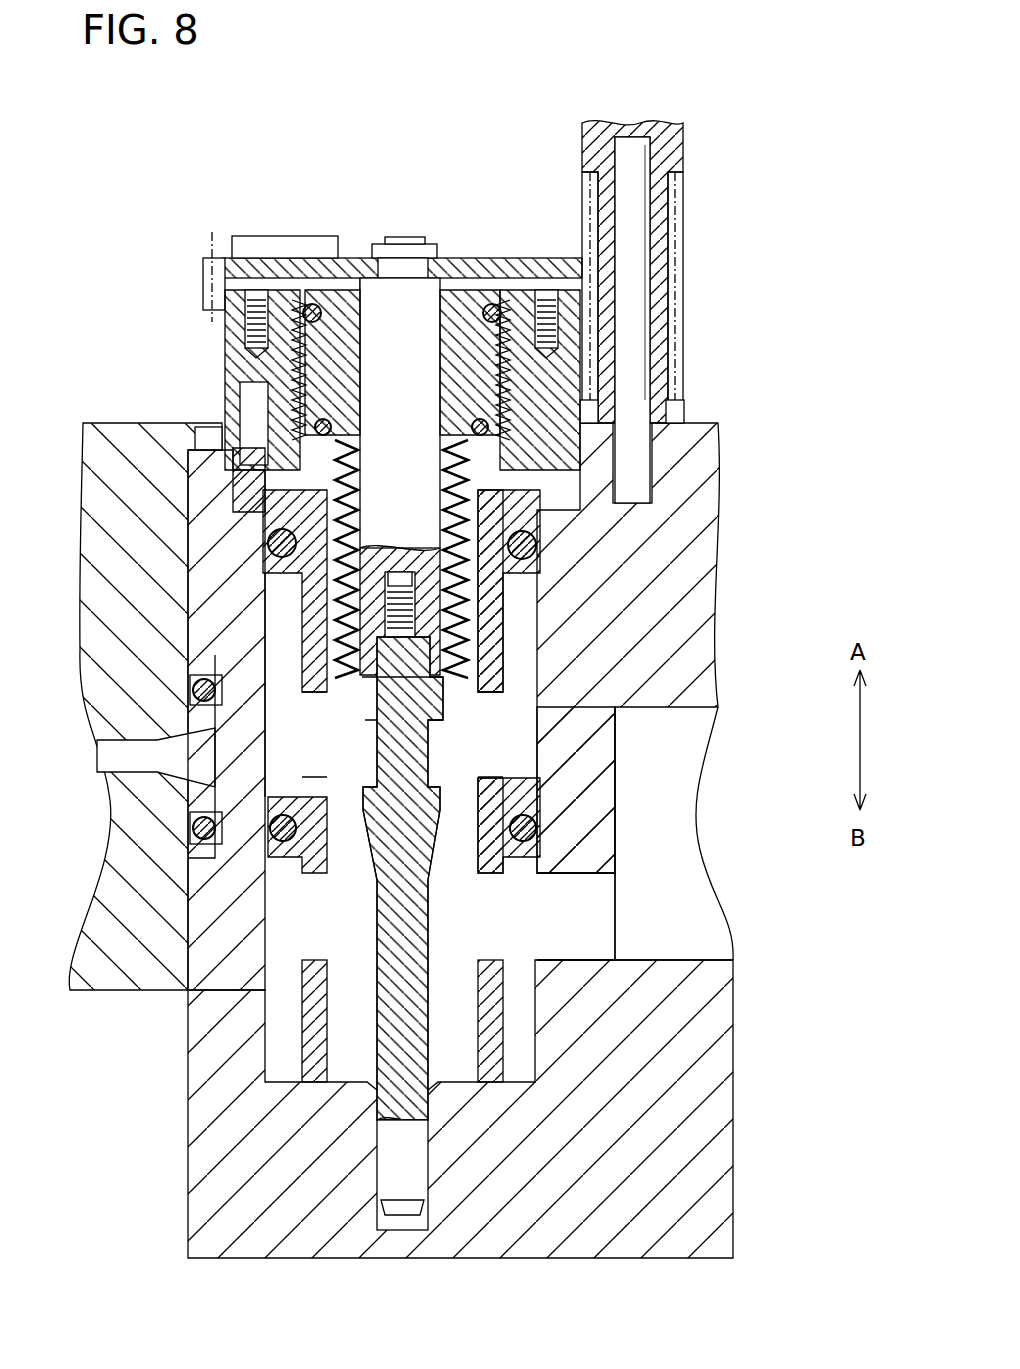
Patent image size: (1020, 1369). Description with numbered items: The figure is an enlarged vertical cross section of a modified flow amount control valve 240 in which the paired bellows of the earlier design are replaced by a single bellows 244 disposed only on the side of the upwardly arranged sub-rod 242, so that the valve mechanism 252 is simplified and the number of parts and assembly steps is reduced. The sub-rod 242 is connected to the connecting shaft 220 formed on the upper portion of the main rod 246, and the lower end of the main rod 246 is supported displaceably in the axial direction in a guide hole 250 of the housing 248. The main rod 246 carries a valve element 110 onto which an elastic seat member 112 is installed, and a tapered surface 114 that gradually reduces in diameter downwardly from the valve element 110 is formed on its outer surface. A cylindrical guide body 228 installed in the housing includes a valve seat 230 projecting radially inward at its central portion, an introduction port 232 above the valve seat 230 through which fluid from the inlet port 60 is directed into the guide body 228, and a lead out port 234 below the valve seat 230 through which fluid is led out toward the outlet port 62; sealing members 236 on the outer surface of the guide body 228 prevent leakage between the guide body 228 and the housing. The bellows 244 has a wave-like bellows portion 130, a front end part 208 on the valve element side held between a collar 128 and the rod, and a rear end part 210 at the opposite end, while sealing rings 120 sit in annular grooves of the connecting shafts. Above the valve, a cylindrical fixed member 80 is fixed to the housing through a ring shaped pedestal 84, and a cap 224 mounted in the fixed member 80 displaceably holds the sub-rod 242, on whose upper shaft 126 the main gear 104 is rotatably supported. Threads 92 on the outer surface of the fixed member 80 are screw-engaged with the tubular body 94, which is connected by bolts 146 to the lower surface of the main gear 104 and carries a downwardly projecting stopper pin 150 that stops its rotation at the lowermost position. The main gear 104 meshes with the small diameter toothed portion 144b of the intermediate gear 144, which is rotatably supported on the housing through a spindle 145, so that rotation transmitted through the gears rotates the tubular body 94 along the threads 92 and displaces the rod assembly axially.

The flow amount control valve 240 is at (183, 145).
The main gear 104 is at (258, 272).
The cap 224 is at (340, 330).
The shaft 126 is at (400, 266).
The sub-rod 242 is at (415, 300).
The bolts 146 is at (542, 300).
The intermediate gear 144 is at (672, 155).
The spindle 145 is at (633, 243).
The small diameter toothed portion 144b is at (676, 292).
The tubular body 94 is at (236, 350).
The threads 92 is at (592, 372).
The sealing rings 120 is at (598, 406).
The rear end part 210 is at (252, 437).
The stopper pin 150 is at (210, 445).
The fixed member 80 is at (250, 485).
The pedestal 84 is at (620, 490).
The sealing members 236 is at (536, 545).
The bellows 244 is at (470, 592).
The bellows portion 130 is at (560, 612).
The connecting shaft 220 is at (330, 614).
The front end part 208 is at (215, 690).
The inlet port 60 is at (235, 705).
The introduction port 232 is at (150, 755).
The main rod 246 is at (270, 792).
The valve seat 230 is at (265, 838).
The collar 128 is at (362, 697).
The valve mechanism 252 is at (447, 760).
The seat member 112 is at (540, 780).
The valve element 110 is at (560, 857).
The lead out port 234 is at (490, 878).
The guide body 228 is at (503, 1002).
The outlet port 62 is at (695, 940).
The tapered surface 114 is at (200, 925).
The housing 248 is at (738, 1072).
The guide hole 250 is at (402, 1225).